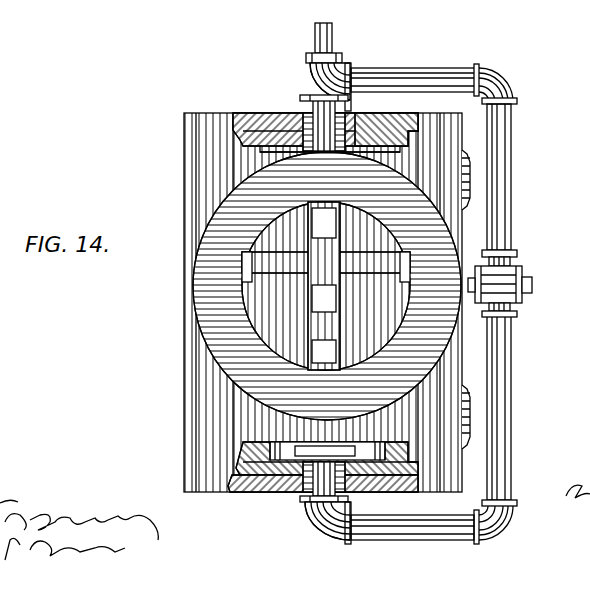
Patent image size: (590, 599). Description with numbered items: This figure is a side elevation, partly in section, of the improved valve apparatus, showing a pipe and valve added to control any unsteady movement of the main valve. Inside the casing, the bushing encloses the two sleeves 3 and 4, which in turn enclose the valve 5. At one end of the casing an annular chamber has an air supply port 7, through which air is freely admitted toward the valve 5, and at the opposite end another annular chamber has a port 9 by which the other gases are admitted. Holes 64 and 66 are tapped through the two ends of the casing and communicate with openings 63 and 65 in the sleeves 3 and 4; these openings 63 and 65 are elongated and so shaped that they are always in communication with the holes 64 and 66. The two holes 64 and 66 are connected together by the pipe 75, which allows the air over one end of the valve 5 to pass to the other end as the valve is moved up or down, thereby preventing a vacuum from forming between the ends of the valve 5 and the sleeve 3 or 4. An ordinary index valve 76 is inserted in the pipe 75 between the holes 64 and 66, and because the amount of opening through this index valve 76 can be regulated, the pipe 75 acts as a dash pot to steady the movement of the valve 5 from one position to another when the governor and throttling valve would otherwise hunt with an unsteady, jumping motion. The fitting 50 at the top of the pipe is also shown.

The sleeve 3 is at (240, 484).
The sleeve 4 is at (266, 124).
The valve 5 is at (245, 448).
The air supply port 7 is at (472, 418).
The port 9 is at (470, 180).
The inlet fitting 50 is at (312, 70).
The opening 63 is at (318, 472).
The hole 64 is at (312, 498).
The opening 65 is at (360, 122).
The hole 66 is at (304, 122).
The pipe 75 is at (503, 186).
The index valve 76 is at (520, 270).